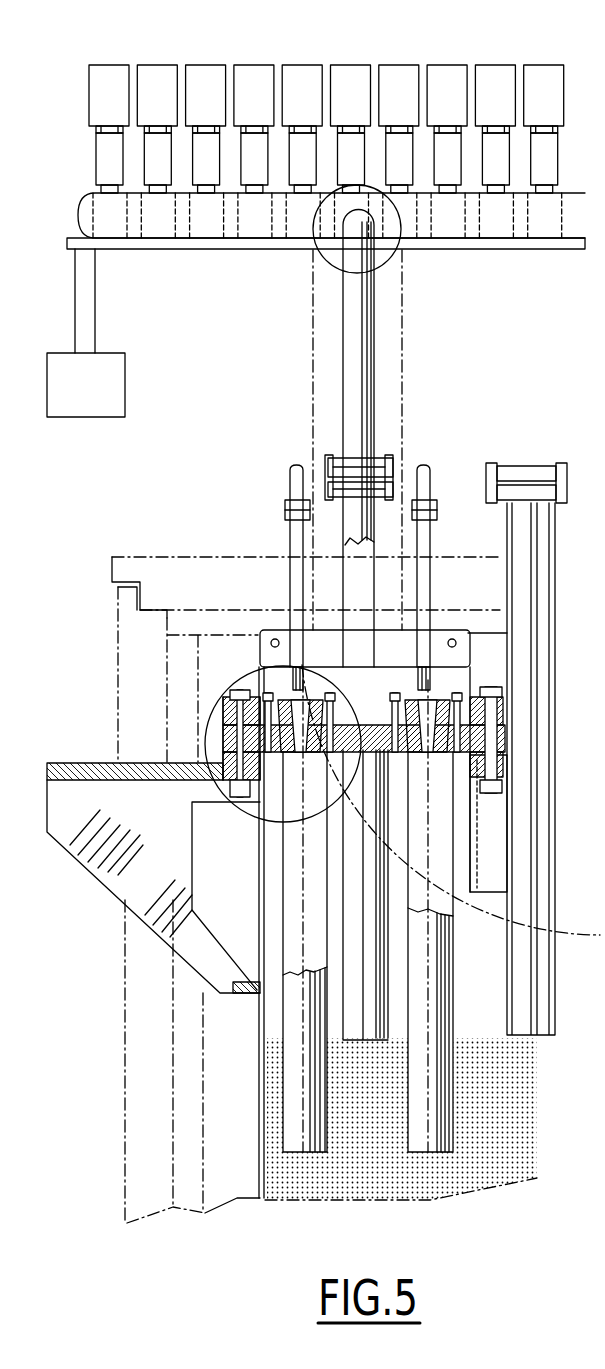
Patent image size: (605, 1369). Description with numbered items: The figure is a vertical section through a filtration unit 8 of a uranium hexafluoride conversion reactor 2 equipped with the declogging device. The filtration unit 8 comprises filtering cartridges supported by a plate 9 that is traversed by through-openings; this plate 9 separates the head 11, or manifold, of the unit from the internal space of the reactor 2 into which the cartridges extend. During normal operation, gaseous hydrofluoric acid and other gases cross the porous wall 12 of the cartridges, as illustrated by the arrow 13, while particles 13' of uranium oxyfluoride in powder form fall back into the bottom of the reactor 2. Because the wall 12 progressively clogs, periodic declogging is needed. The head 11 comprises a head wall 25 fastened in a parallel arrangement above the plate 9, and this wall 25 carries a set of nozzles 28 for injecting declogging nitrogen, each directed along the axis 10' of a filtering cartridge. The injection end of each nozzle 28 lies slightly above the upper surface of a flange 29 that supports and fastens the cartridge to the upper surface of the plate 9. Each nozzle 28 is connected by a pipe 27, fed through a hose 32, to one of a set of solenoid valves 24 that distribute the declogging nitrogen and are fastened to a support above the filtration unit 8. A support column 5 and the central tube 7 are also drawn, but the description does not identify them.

The conversion reactor 2 is at (158, 1152).
The support column 5 is at (528, 643).
The blow pin tube 7 is at (360, 596).
The filtration unit 8 is at (222, 1010).
The plate 9 is at (502, 737).
The axis of filtering cartridge 10' is at (368, 916).
The head 11 is at (327, 668).
The porous wall 12 is at (328, 898).
The arrow 13 is at (467, 1026).
The particles of uranium oxyfluoride 13' is at (414, 1149).
The solenoid valves 24 is at (110, 143).
The head wall 25 is at (265, 667).
The pipe 27 is at (296, 533).
The nozzle 28 is at (305, 650).
The flange 29 is at (238, 682).
The hose 32 is at (295, 478).